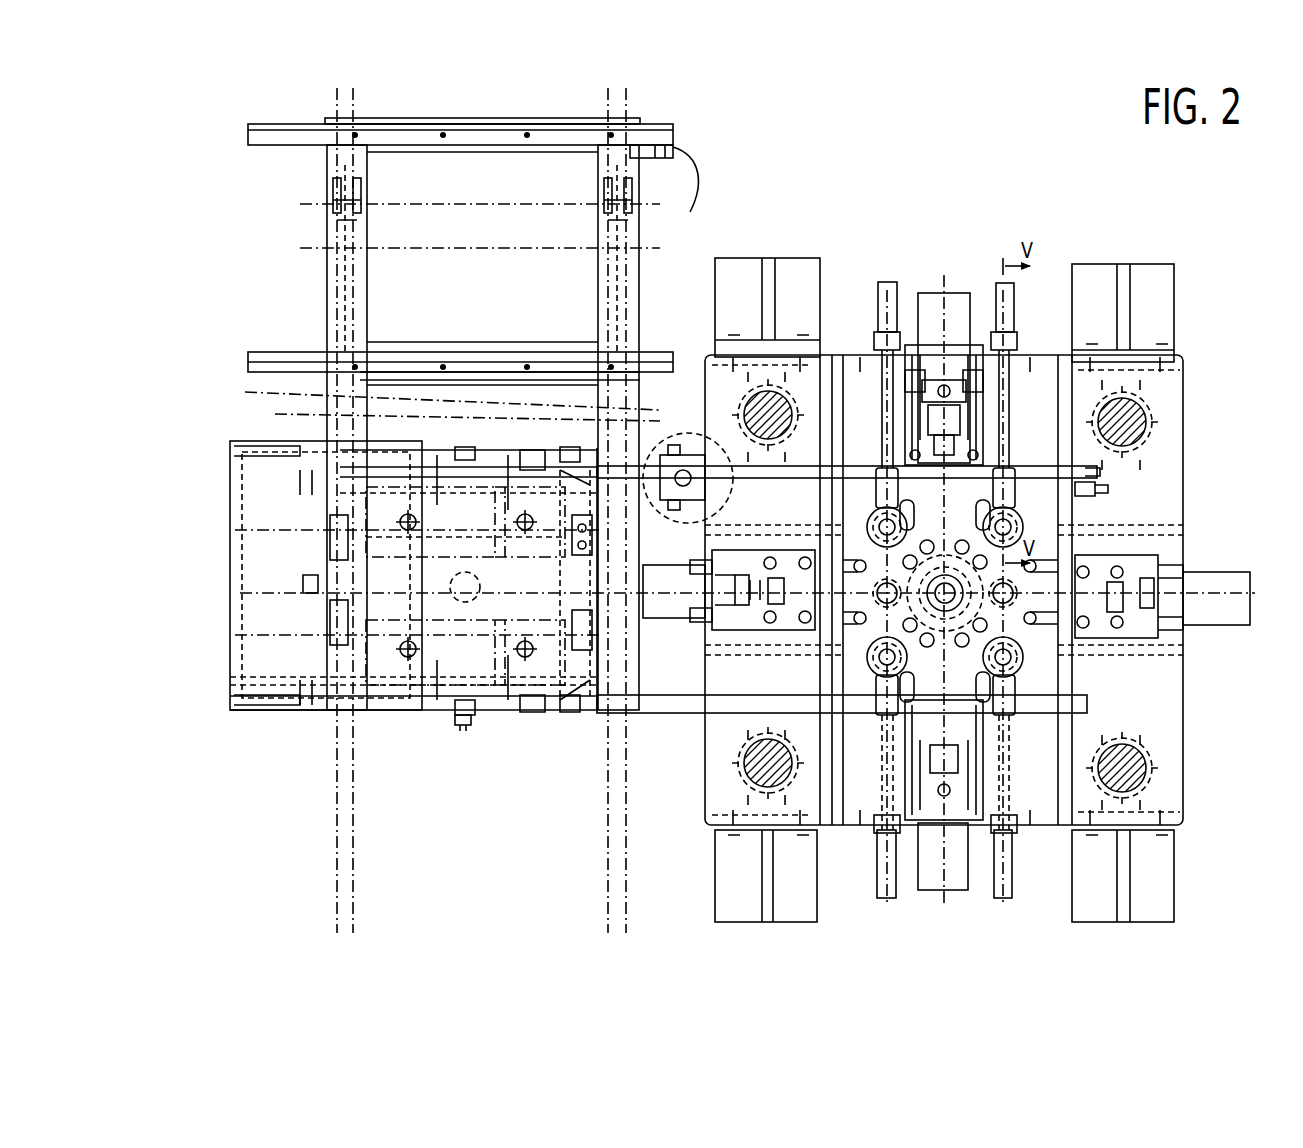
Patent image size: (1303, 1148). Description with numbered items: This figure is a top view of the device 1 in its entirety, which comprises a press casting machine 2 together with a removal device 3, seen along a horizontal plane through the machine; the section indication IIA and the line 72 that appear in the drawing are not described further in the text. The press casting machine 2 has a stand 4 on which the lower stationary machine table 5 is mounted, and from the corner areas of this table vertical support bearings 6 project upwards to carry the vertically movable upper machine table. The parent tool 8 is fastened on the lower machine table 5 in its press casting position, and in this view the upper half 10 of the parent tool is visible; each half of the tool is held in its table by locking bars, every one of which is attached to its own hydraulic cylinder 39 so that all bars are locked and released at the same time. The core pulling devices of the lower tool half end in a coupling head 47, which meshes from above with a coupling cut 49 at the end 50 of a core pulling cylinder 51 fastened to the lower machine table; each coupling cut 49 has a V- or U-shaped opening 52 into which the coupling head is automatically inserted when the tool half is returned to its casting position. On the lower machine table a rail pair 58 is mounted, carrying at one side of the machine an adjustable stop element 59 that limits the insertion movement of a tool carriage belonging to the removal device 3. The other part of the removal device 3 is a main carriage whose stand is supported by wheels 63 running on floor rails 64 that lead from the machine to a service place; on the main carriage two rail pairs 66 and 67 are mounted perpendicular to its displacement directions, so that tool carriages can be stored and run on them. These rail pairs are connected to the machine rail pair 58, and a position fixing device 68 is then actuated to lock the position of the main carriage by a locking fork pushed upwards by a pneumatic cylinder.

The device 1 is at (758, 222).
The press casting machine 2 is at (946, 539).
The removal device 3 is at (686, 130).
The stand 4 is at (1177, 306).
The lower stationary machine table 5 is at (1186, 736).
The vertical support bearings 6 is at (767, 390).
The parent tool 8 is at (463, 727).
The upper half 10 is at (395, 547).
The hydraulic cylinder 39 is at (888, 283).
The coupling head 47 is at (1010, 400).
The coupling cuts 49 is at (987, 397).
The end 50 is at (937, 390).
The core pulling cylinder 51 is at (955, 307).
The V- or U-shaped opening 52 is at (910, 403).
The rail pair 58 is at (737, 468).
The adjustable stop element 59 is at (1087, 491).
The wheels 63 is at (348, 195).
The floor rails 64 is at (350, 770).
The rail pair 66 is at (654, 352).
The rail pair 67 is at (232, 481).
The position fixing device 68 is at (693, 429).
The reference axis 72 is at (262, 362).
The section view indicator IIA is at (233, 382).